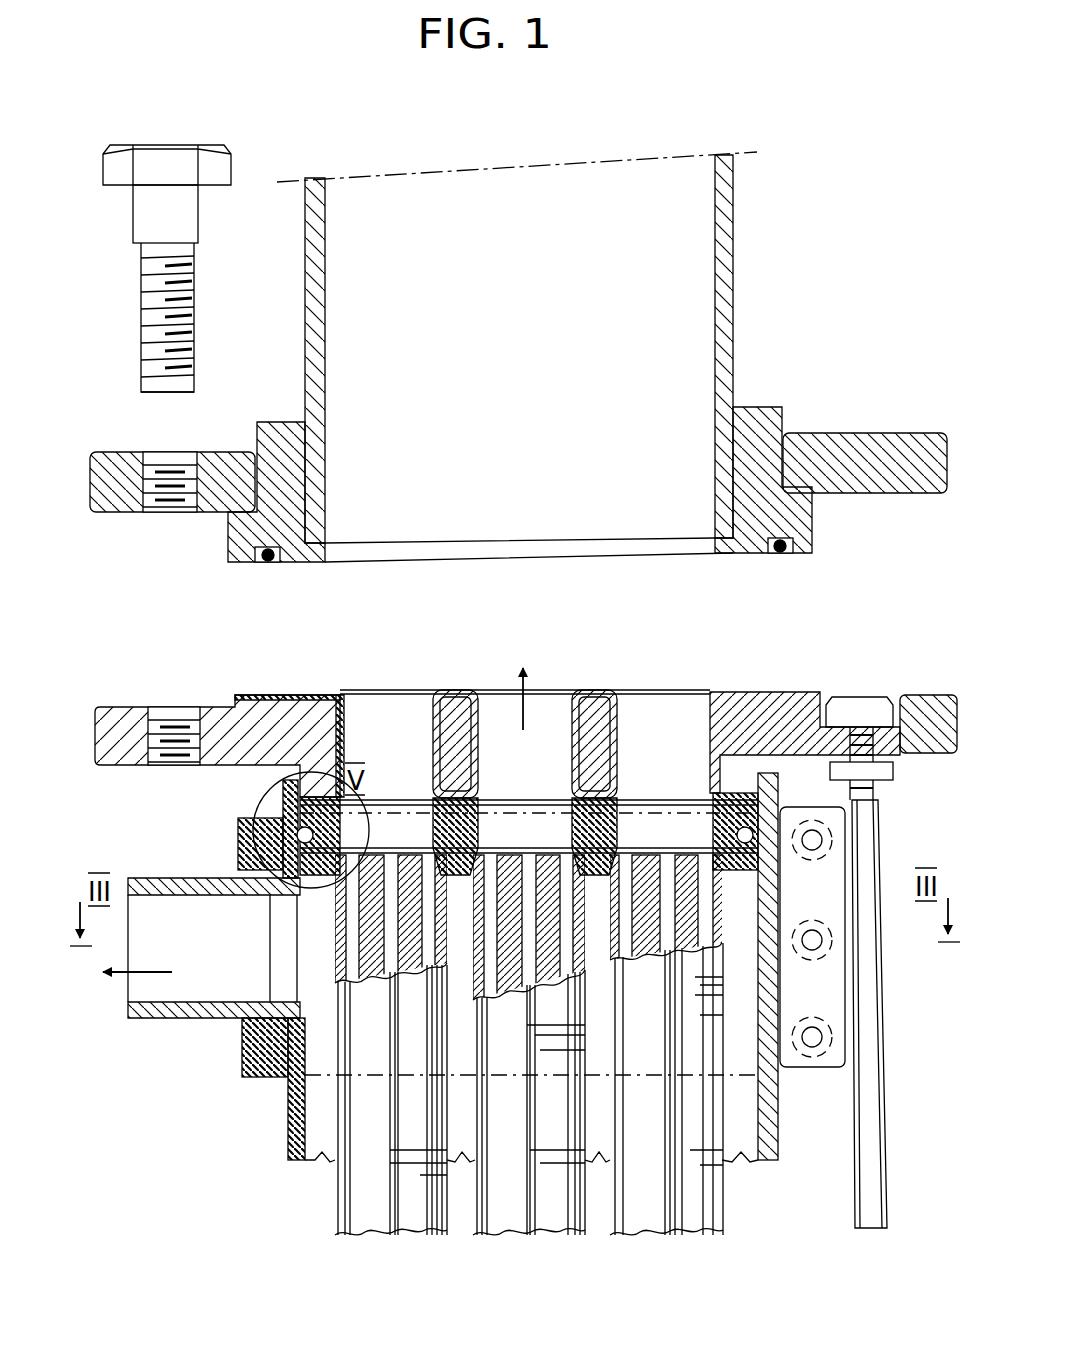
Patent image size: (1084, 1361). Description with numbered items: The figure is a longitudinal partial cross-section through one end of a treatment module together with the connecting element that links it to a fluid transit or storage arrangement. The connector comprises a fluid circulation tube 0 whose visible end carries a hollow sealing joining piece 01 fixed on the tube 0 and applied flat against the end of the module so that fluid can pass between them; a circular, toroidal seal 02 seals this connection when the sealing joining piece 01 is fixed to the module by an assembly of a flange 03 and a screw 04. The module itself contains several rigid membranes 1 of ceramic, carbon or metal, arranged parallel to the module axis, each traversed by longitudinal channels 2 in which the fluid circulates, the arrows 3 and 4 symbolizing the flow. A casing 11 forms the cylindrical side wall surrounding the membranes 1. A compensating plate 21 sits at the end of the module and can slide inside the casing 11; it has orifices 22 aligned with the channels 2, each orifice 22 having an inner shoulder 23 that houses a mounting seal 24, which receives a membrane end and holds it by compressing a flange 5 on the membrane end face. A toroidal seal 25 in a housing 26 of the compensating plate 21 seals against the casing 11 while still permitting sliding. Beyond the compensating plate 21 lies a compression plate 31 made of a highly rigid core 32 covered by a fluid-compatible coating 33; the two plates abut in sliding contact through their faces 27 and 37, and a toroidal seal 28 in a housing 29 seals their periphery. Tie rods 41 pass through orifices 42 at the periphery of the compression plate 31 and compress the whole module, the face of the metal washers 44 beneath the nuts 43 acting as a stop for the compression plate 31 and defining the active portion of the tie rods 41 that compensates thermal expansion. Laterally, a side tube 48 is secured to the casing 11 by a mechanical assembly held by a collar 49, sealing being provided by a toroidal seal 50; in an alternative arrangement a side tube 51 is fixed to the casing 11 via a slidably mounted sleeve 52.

The fluid circulation tube 0 is at (724, 210).
The hollow sealing joining piece 01 is at (762, 420).
The circular seal 02 is at (268, 562).
The flange 03 is at (870, 455).
The screw 04 is at (172, 165).
The membrane 1 is at (375, 1215).
The longitudinal channel 2 is at (247, 965).
The arrow 3 is at (508, 680).
The arrow 4 is at (137, 949).
The flange 5 is at (306, 893).
The casing 11 is at (292, 1141).
The compensating plate 21 is at (630, 828).
The orifice 22 is at (650, 825).
The inner shoulder 23 is at (340, 835).
The mounting seal 24 is at (270, 853).
The toroidal seal 25 is at (260, 826).
The housing 26 is at (298, 808).
The face 27 is at (592, 826).
The toroidal seal 28 is at (714, 802).
The housing 29 is at (760, 800).
The compression plate 31 is at (222, 725).
The core 32 is at (312, 770).
The coating 33 is at (437, 738).
The face 37 is at (592, 790).
The tie rod 41 is at (870, 1024).
The orifice 42 is at (888, 742).
The nut 43 is at (838, 712).
The metal washer 44 is at (894, 708).
The side tube 48 is at (176, 880).
The collar 49 is at (262, 1058).
The toroidal seal 50 is at (246, 1030).
The side tube 51 is at (268, 1071).
The sleeve 52 is at (835, 975).